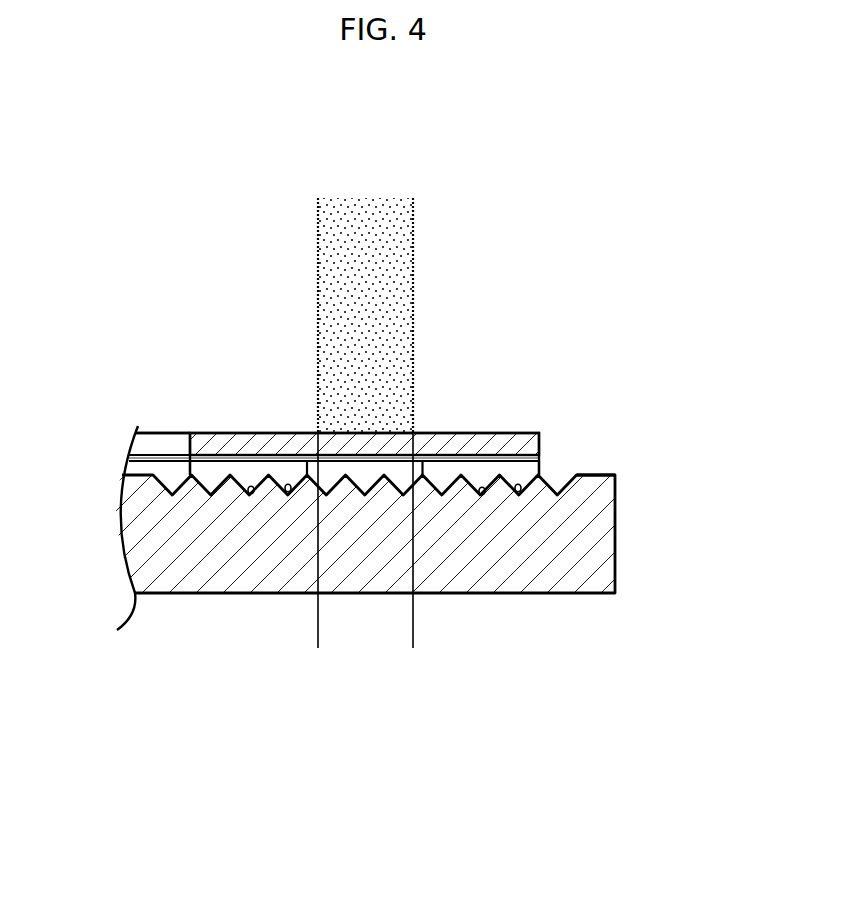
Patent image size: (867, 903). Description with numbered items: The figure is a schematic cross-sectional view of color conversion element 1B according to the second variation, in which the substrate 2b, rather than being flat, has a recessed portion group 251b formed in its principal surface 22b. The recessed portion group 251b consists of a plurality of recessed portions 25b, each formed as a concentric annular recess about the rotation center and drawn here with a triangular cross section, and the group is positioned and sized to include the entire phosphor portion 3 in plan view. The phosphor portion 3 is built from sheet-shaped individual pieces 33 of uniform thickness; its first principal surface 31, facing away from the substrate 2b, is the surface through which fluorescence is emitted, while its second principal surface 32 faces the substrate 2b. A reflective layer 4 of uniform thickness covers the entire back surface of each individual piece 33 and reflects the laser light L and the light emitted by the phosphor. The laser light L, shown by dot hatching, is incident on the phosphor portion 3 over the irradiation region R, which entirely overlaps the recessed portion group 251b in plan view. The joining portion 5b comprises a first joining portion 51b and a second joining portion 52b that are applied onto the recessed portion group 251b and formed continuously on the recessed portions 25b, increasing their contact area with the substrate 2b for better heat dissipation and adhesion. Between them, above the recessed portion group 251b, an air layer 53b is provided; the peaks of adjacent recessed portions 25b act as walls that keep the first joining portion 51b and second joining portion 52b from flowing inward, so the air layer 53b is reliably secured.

The color conversion element 1B is at (100, 197).
The substrate 2b is at (363, 581).
The principal surface 22b is at (610, 475).
The recessed portion 25b is at (286, 492).
The recessed portion group 251b is at (478, 688).
The phosphor portion 3 is at (346, 414).
The individual piece 33 is at (366, 444).
The first principal surface 31 is at (200, 433).
The second principal surface 32 is at (192, 458).
The reflective layer 4 is at (315, 425).
The joining portion 5b is at (420, 413).
The first joining portion 51b is at (253, 473).
The second joining portion 52b is at (520, 473).
The air layer 53b is at (418, 470).
The laser light L is at (326, 252).
The irradiation region R is at (413, 643).